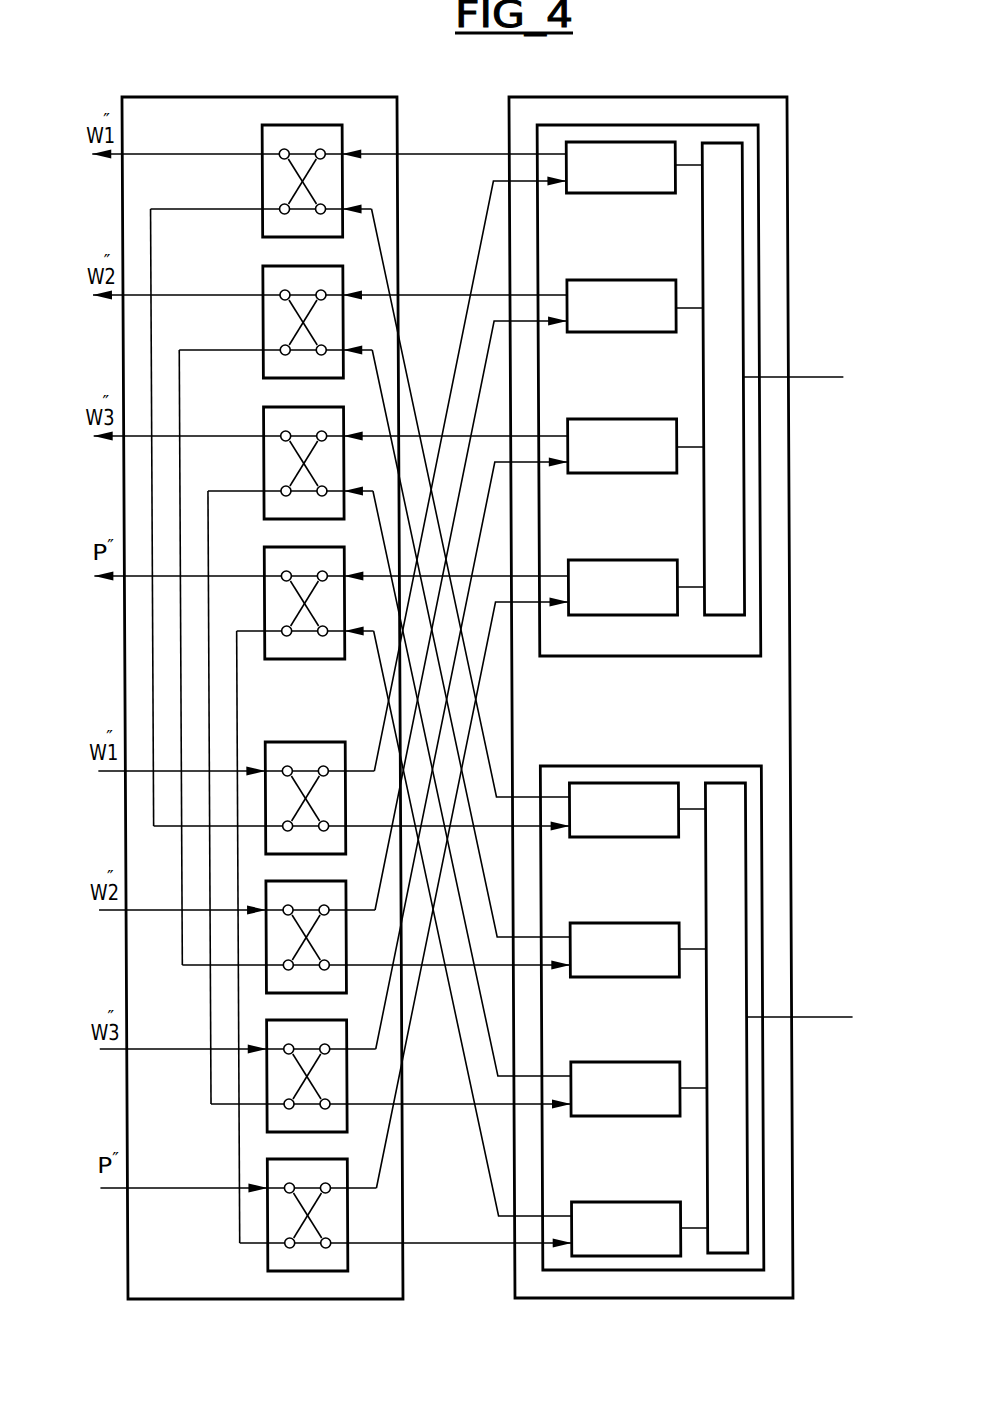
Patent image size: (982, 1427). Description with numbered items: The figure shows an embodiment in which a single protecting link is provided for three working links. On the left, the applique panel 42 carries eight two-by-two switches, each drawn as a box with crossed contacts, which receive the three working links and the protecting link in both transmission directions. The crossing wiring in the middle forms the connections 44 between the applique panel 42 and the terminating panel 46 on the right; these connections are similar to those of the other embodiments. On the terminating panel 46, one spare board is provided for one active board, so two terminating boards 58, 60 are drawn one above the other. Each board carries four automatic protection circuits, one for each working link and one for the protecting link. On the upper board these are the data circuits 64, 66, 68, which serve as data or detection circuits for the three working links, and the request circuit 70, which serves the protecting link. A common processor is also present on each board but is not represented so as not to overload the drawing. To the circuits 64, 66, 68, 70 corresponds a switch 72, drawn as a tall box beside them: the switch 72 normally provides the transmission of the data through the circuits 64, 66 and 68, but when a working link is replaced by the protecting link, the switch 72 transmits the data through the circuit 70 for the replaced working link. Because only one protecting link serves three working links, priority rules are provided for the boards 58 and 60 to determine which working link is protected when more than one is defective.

The applique panel 42 is at (262, 719).
The connections between the applique panel and the terminating panel 44 is at (471, 757).
The terminating panel 46 is at (681, 717).
The terminating board 58 is at (697, 656).
The terminating board 60 is at (637, 766).
The data circuit 64 is at (605, 194).
The data circuit 66 is at (612, 333).
The data circuit 68 is at (612, 474).
The request circuit 70 is at (613, 615).
The switch 72 is at (737, 391).